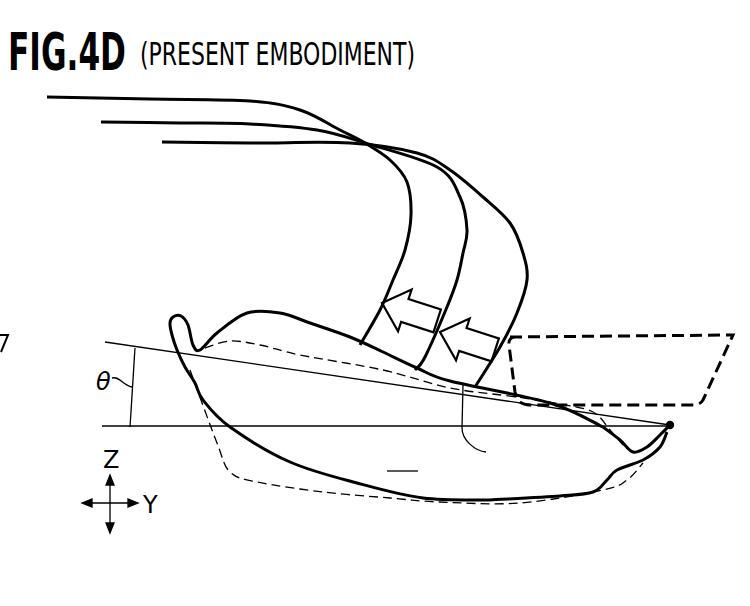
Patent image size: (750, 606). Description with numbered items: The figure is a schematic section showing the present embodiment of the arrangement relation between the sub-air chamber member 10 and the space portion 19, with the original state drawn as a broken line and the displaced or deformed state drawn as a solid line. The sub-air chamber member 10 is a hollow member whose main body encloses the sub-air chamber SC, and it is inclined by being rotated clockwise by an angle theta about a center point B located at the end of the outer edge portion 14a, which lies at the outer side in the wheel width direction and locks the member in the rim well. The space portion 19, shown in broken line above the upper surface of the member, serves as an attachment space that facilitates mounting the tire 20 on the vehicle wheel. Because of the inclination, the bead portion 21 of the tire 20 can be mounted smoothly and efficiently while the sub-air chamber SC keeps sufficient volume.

The sub-air chamber member 10 is at (346, 325).
The tire 20 is at (457, 168).
The space portion 19 is at (635, 383).
The bead portion 21 is at (491, 428).
The outer edge portion 14a is at (670, 432).
The center point B is at (677, 423).
The sub-air chamber SC is at (402, 458).